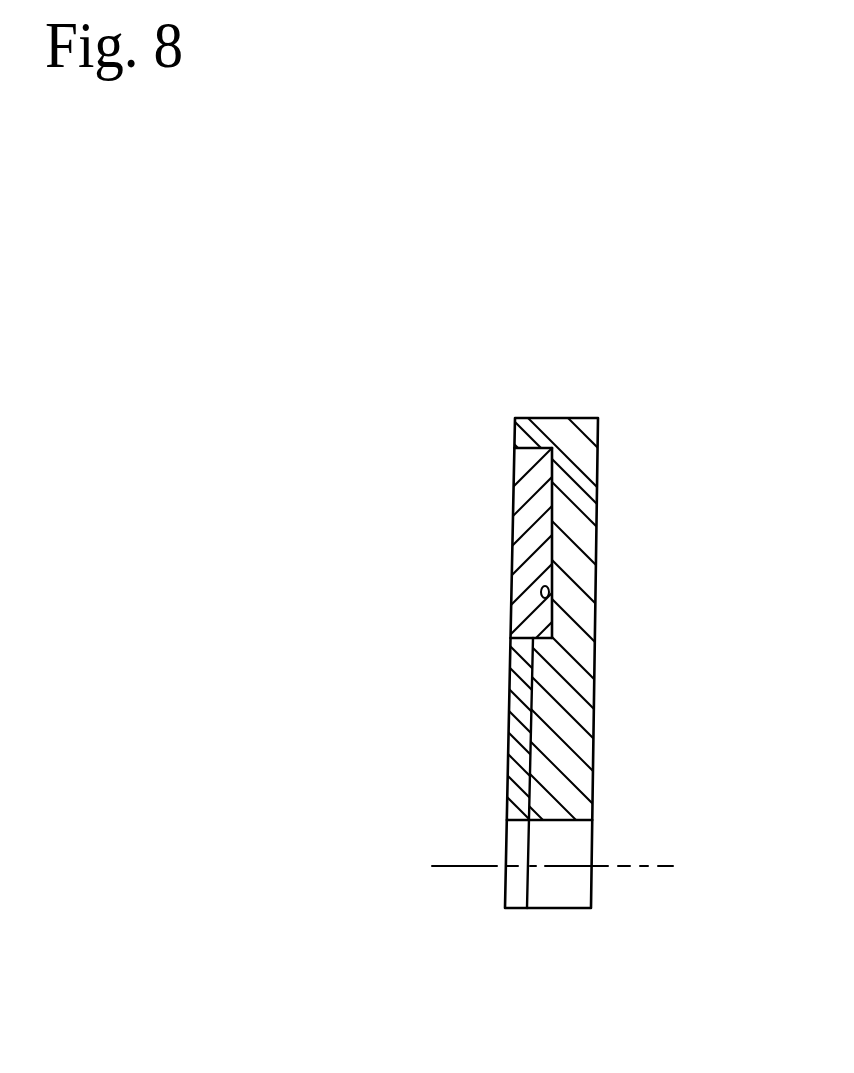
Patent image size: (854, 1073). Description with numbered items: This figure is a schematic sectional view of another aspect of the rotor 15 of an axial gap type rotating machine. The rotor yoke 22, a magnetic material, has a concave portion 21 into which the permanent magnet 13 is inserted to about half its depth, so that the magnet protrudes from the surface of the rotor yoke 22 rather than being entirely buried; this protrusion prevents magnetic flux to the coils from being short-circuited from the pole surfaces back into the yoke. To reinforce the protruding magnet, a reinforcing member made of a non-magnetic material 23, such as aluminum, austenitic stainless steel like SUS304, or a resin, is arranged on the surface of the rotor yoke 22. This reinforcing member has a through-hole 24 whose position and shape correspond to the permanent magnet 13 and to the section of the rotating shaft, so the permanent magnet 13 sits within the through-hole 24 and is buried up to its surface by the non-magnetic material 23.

The rotor 15 is at (623, 380).
The rotor yoke 22 is at (585, 528).
The permanent magnet 13 is at (512, 563).
The through-hole 24 is at (513, 449).
The concave portion 21 is at (552, 605).
The non-magnetic material 23 is at (508, 730).